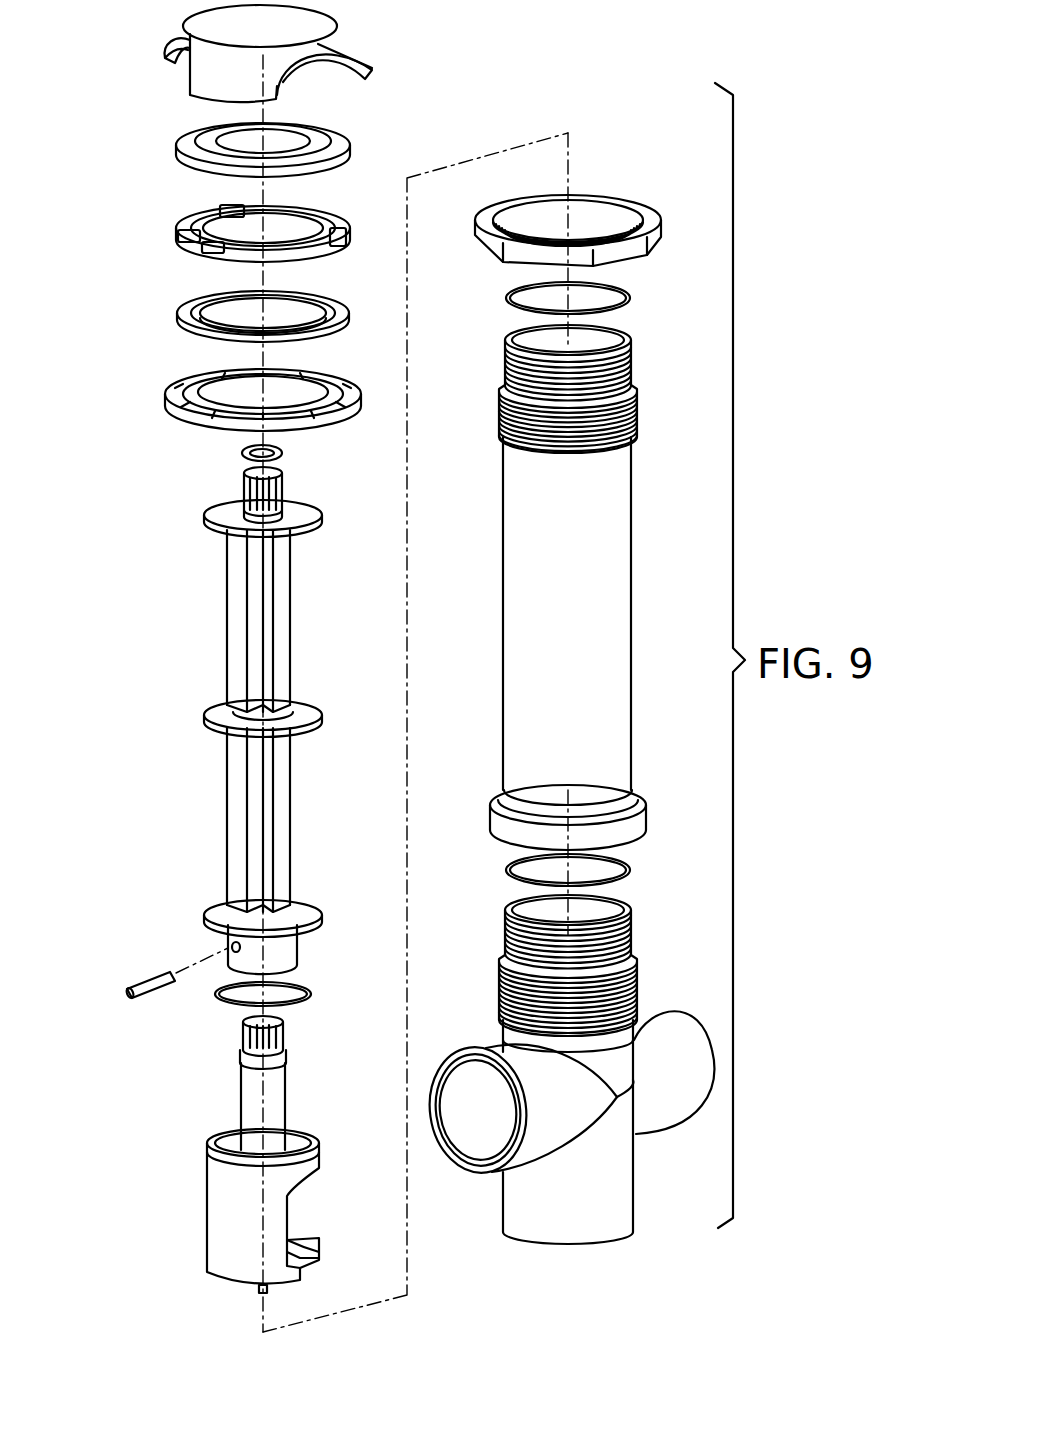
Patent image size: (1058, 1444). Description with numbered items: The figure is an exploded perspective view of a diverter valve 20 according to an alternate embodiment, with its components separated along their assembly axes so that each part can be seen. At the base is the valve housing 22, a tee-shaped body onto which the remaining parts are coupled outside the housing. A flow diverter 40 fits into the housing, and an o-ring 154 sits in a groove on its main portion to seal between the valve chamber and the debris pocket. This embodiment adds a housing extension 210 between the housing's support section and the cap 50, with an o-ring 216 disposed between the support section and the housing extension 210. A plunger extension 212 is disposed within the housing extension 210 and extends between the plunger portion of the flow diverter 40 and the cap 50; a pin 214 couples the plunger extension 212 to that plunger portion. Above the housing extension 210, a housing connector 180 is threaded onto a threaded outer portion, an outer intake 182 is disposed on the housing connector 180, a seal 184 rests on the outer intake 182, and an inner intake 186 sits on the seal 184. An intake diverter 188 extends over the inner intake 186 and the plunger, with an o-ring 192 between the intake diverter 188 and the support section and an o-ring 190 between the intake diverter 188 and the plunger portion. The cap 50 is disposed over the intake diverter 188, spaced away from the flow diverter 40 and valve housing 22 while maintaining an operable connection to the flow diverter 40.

The diverter valve 20 is at (115, 520).
The valve housing 22 is at (684, 1030).
The flow diverter 40 is at (240, 1104).
The cap 50 is at (340, 30).
The o-ring 154 is at (312, 992).
The housing connector 180 is at (648, 218).
The outer intake 182 is at (185, 380).
The seal 184 is at (200, 310).
The inner intake 186 is at (200, 226).
The intake diverter 188 is at (200, 140).
The o-ring 190 is at (240, 453).
The o-ring 192 is at (632, 298).
The housing extension 210 is at (647, 612).
The plunger extension 212 is at (232, 600).
The pin 214 is at (145, 978).
The o-ring 216 is at (628, 870).